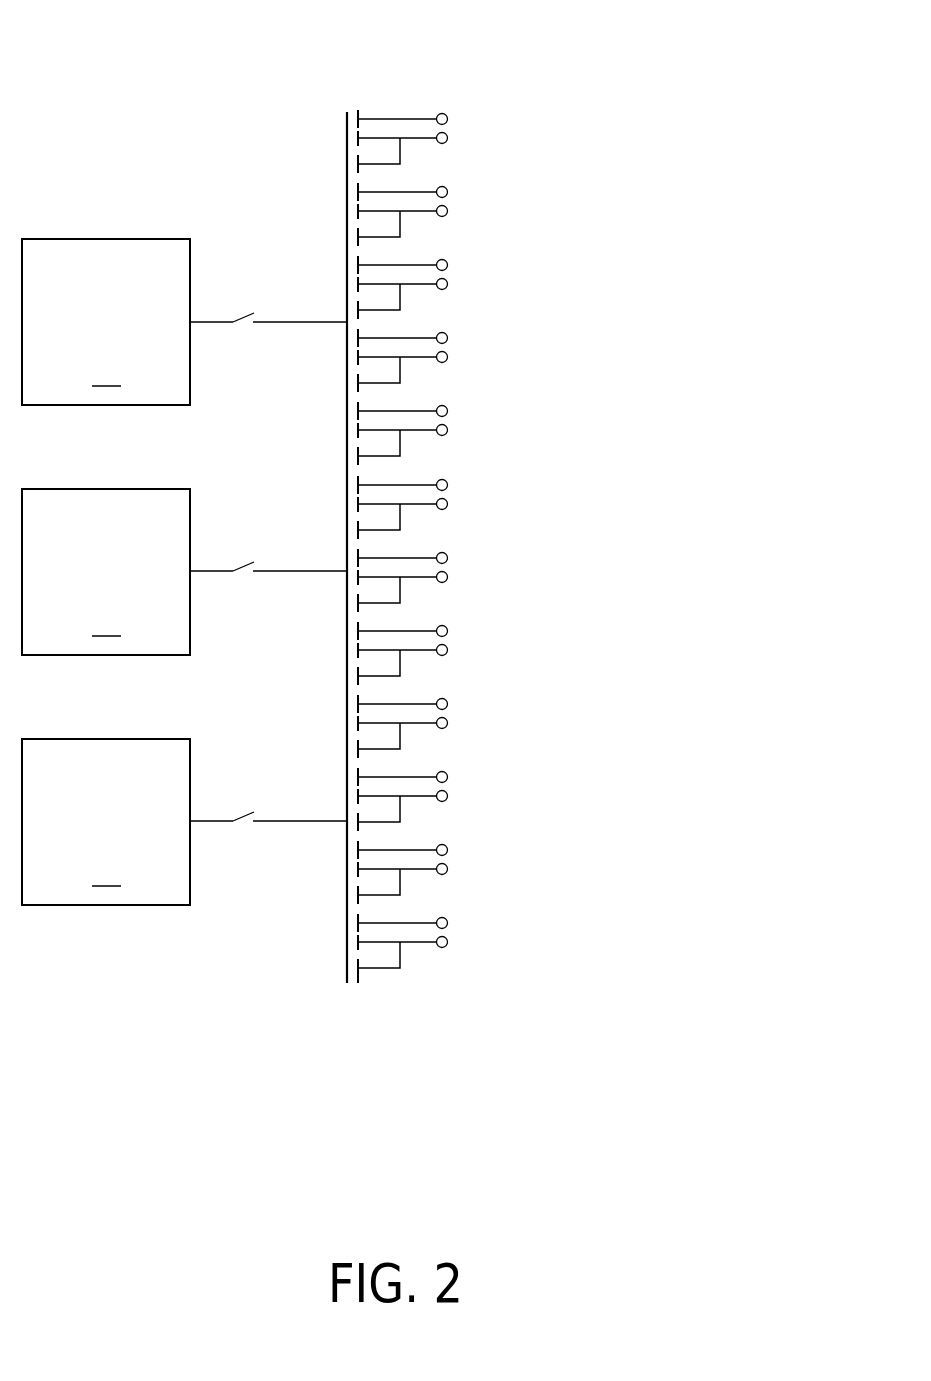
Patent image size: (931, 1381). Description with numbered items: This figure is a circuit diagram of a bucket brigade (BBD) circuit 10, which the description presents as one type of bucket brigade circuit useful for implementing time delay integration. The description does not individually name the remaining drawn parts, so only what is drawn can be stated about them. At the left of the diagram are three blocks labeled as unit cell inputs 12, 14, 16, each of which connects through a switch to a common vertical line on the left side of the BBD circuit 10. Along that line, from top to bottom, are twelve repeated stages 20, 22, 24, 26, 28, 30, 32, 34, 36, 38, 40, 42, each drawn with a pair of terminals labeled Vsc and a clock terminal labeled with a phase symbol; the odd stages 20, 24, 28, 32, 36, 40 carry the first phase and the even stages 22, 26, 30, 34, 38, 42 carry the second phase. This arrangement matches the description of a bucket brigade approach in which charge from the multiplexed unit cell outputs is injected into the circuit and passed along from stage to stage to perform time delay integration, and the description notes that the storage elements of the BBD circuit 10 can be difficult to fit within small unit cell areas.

The BBD circuit 10 is at (366, 84).
The unit cell input 12 is at (184, 322).
The unit cell input 14 is at (184, 572).
The unit cell input 16 is at (184, 822).
The switched capacitor unit cell 20 is at (540, 141).
The switched capacitor unit cell 22 is at (540, 214).
The switched capacitor unit cell 24 is at (540, 287).
The switched capacitor unit cell 26 is at (540, 360).
The switched capacitor unit cell 28 is at (540, 433).
The switched capacitor unit cell 30 is at (540, 507).
The switched capacitor unit cell 32 is at (540, 580).
The switched capacitor unit cell 34 is at (540, 653).
The switched capacitor unit cell 36 is at (540, 726).
The switched capacitor unit cell 38 is at (540, 799).
The switched capacitor unit cell 40 is at (540, 872).
The switched capacitor unit cell 42 is at (540, 945).